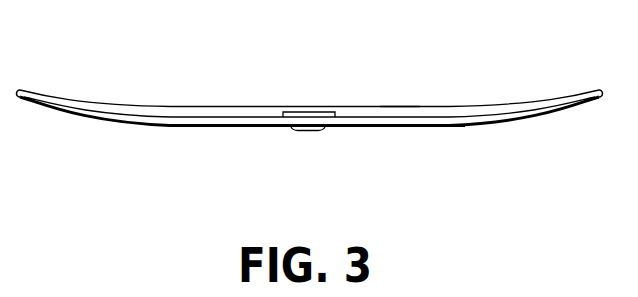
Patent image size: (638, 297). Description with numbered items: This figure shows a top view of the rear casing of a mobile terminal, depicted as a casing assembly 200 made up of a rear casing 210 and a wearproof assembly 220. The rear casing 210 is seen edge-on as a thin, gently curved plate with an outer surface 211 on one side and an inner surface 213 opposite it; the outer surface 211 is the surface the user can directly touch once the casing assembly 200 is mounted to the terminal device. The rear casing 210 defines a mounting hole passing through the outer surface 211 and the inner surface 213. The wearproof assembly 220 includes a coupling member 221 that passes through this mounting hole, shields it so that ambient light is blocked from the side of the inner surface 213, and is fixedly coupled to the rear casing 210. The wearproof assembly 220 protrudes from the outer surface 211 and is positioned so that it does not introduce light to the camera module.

The casing assembly 200 is at (36, 87).
The rear casing 210 is at (194, 105).
The outer surface 211 is at (445, 127).
The inner surface 213 is at (400, 116).
The wearproof assembly 220 is at (303, 129).
The coupling member 221 is at (301, 116).